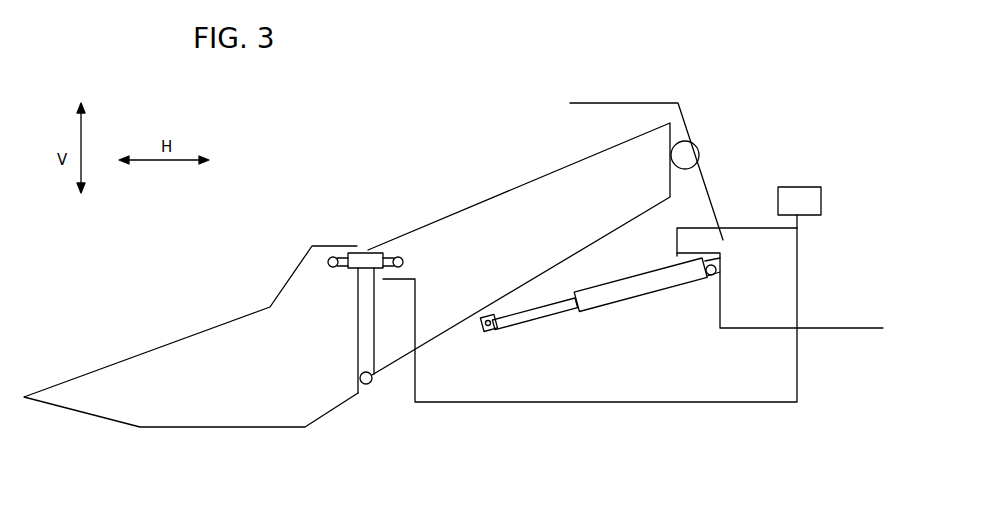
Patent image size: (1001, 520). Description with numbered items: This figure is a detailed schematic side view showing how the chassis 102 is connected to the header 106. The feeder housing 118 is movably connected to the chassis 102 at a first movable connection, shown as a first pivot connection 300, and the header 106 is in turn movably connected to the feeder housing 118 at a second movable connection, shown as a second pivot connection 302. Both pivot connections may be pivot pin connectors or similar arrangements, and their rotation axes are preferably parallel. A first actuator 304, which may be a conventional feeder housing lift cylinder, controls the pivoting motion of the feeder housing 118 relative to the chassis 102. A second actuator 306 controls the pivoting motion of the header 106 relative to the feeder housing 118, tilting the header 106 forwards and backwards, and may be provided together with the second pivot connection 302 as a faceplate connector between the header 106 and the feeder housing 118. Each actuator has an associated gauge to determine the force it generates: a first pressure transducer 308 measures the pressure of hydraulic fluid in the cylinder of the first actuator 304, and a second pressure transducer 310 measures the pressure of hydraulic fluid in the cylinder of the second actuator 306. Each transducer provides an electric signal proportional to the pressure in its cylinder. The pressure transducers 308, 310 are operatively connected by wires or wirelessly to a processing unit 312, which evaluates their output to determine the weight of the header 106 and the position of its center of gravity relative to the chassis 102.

The chassis 102 is at (812, 315).
The header 106 is at (260, 362).
The feeder housing 118 is at (553, 190).
The first pivot connection 300 is at (690, 148).
The second pivot connection 302 is at (370, 385).
The first actuator 304 is at (607, 295).
The second actuator 306 is at (370, 251).
The first pressure transducer 308 is at (668, 280).
The second pressure transducer 310 is at (378, 265).
The processing unit 312 is at (812, 197).